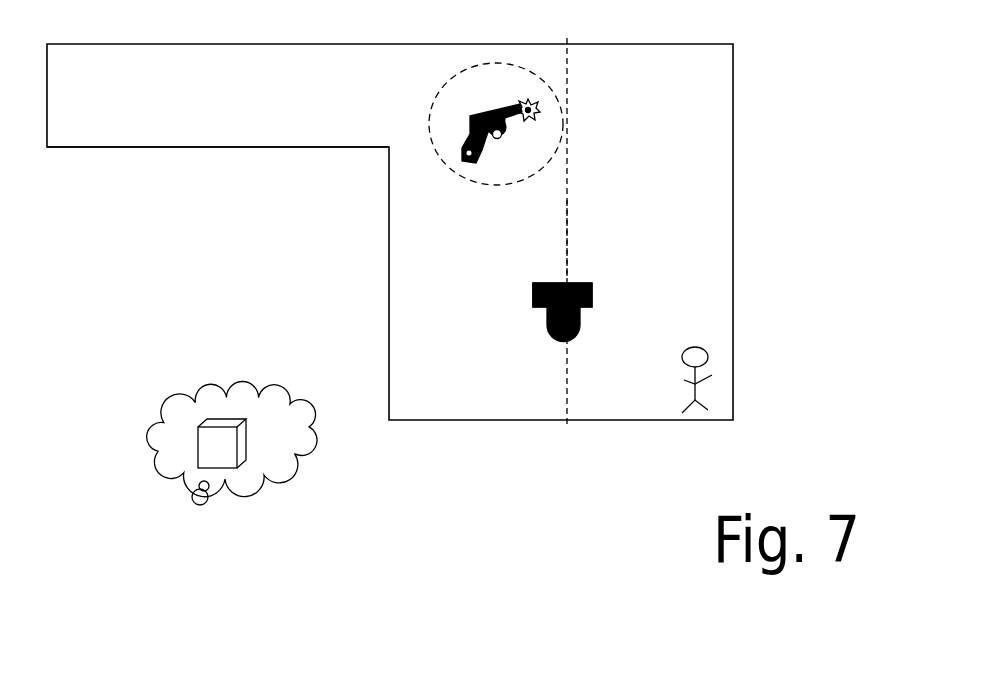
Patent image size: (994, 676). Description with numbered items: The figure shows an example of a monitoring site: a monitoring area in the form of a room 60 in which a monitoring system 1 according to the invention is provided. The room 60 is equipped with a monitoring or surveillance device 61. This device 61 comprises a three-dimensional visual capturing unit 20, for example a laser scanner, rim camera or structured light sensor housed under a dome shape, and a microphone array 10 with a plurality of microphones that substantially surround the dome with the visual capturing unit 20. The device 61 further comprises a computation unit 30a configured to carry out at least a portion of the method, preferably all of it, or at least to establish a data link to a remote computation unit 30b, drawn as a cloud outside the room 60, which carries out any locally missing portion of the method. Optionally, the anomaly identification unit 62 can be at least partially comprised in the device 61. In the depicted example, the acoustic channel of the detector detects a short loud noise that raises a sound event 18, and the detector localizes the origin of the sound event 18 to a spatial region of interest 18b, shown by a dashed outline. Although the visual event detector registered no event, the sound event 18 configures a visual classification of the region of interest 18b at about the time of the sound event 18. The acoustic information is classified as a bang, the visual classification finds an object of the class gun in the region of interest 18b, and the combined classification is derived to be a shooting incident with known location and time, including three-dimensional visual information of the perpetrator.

The monitoring system 1 is at (425, 231).
The microphone array 10 is at (523, 286).
The sound event 18 is at (558, 119).
The spatial region of interest 18b is at (553, 133).
The 3D visual capturing unit 20 is at (598, 347).
The computation unit 30a is at (531, 266).
The remote computation unit 30b is at (213, 406).
The room 60 is at (218, 179).
The monitoring or surveillance device 61 is at (621, 240).
The anomaly identification unit 62 is at (501, 320).